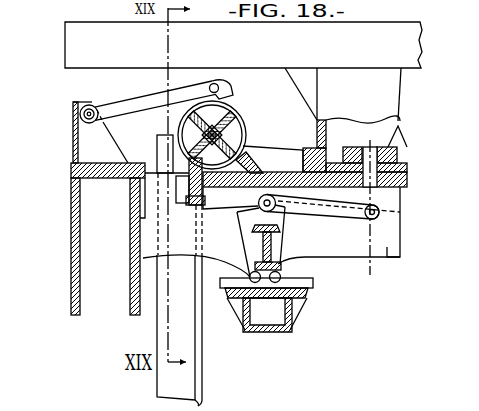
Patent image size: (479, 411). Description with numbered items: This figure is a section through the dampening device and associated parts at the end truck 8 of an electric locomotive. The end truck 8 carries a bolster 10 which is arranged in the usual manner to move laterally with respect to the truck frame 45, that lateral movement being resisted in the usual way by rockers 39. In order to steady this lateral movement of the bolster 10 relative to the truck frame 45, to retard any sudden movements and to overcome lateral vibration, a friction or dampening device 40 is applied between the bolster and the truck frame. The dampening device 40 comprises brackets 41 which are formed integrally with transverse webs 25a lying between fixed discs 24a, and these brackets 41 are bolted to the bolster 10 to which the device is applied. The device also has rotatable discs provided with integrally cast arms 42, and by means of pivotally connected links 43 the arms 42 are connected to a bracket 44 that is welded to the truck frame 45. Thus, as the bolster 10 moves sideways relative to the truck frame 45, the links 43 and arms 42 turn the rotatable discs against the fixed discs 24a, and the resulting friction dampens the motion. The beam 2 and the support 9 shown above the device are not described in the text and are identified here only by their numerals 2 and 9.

The beam 2 is at (243, 45).
The end truck 8 is at (70, 207).
The support 9 is at (393, 140).
The bolster 10 is at (328, 207).
The fixed discs 24a is at (186, 139).
The transverse webs 25a is at (238, 151).
The rockers 39 is at (300, 262).
The dampening device 40 is at (238, 129).
The brackets 41 is at (250, 170).
The arms 42 is at (234, 97).
The links 43 is at (155, 95).
The bracket 44 is at (76, 133).
The truck frame 45 is at (388, 257).